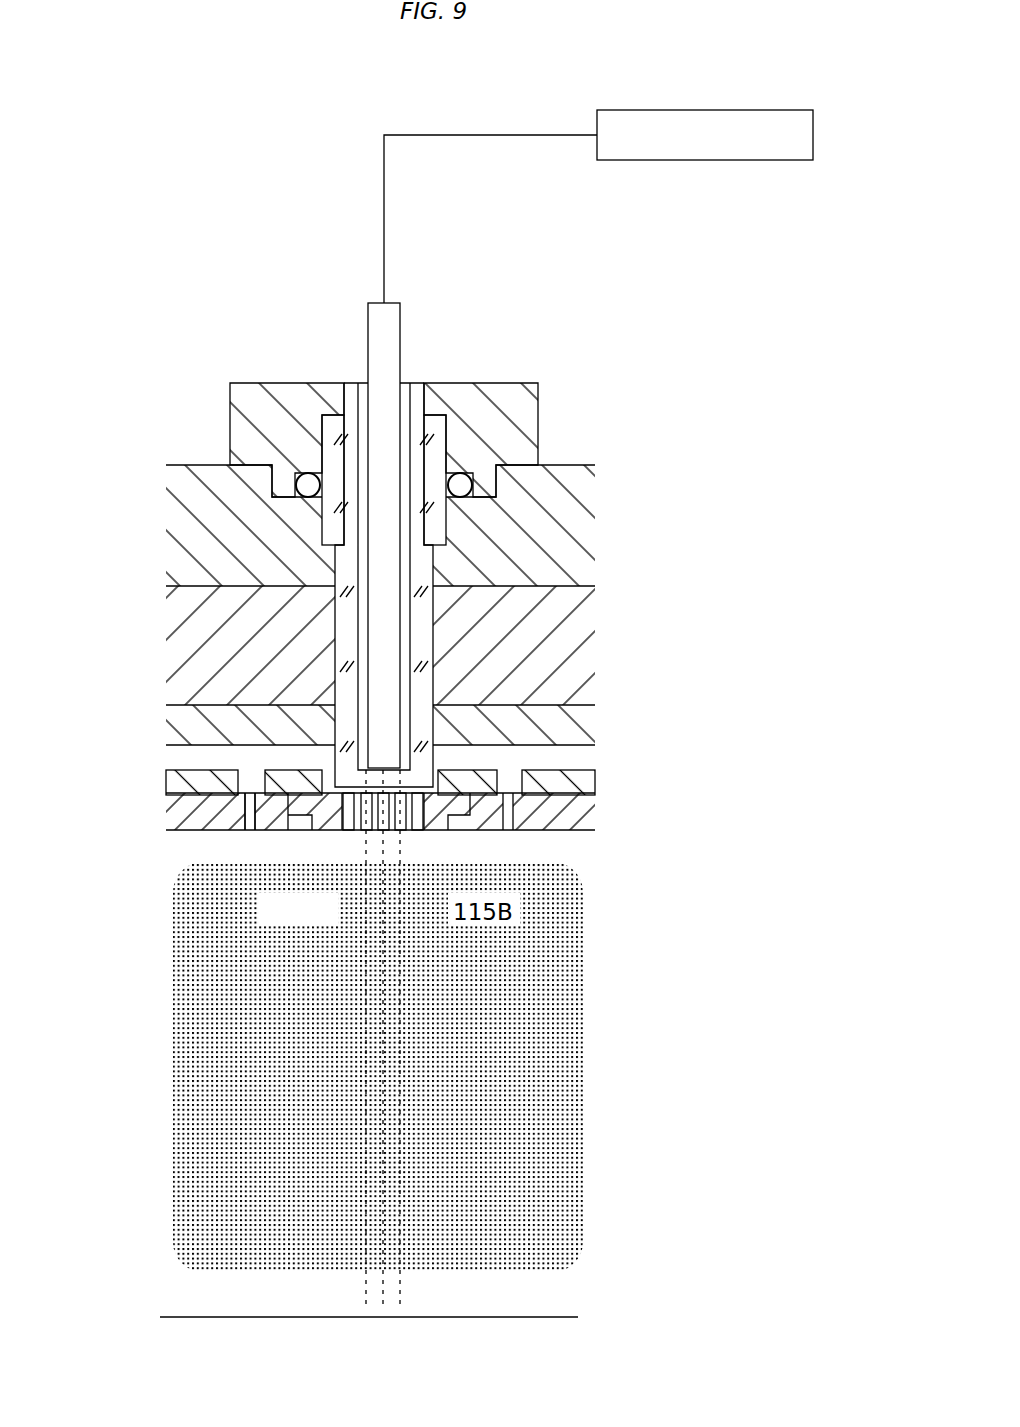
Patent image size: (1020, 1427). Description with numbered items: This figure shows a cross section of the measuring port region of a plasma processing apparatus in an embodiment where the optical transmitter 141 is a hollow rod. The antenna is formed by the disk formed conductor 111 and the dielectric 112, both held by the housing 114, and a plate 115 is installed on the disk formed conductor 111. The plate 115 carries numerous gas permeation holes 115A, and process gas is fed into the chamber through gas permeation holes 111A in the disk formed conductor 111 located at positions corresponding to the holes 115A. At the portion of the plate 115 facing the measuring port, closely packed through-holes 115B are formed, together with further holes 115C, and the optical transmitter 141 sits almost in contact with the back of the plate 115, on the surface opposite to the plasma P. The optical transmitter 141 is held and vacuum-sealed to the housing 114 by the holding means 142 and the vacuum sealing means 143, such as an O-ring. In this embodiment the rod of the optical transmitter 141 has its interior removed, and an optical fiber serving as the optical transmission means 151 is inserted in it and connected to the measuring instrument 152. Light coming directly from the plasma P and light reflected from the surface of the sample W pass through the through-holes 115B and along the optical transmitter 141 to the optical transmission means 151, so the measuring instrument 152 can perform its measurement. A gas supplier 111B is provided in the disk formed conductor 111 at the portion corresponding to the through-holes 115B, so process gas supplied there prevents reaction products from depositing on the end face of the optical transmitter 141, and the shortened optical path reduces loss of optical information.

The disk formed conductor 111 is at (215, 697).
The gas permeation hole 111A is at (252, 780).
The gas supplier 111B is at (304, 796).
The dielectric 112 is at (182, 608).
The housing 114 is at (182, 507).
The plate 115 is at (357, 852).
The gas permeation hole 115A is at (248, 832).
The through-hole 115B is at (408, 843).
The gas discharge hole 115C is at (468, 818).
The optical transmitter 141 is at (433, 522).
The holding means 142 is at (468, 383).
The vacuum sealing means 143 is at (470, 463).
The optical transmission means 151 is at (402, 318).
The measuring instrument 152 is at (742, 161).
The plasma P is at (535, 1065).
The sample W is at (175, 1317).